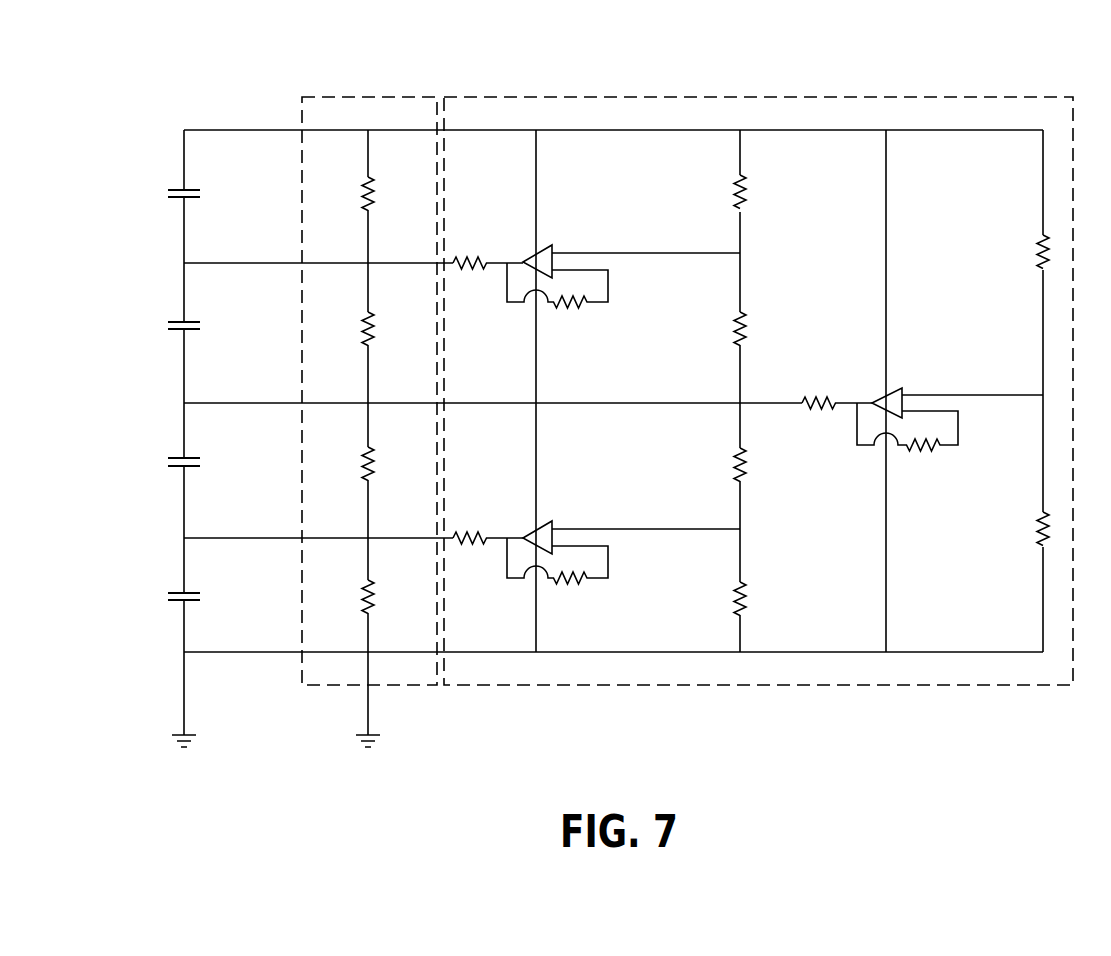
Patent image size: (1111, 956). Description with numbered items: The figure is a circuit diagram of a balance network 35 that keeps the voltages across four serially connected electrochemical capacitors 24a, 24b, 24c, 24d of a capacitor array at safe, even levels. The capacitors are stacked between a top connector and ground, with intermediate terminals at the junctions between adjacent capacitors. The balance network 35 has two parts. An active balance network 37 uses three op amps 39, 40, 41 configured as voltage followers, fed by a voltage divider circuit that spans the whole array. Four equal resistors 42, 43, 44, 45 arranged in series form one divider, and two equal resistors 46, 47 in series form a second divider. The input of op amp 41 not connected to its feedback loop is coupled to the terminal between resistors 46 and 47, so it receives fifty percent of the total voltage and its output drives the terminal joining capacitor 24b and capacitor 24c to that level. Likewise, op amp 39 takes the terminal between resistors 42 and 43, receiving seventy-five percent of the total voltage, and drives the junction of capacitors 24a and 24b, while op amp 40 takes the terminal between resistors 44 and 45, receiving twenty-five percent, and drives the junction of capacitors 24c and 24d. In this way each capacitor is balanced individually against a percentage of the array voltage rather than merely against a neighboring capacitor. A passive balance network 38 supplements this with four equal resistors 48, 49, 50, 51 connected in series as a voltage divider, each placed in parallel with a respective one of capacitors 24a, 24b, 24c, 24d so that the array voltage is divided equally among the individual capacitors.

The balance network 35 is at (1086, 38).
The capacitor 24a is at (168, 196).
The capacitor 24b is at (168, 328).
The capacitor 24c is at (168, 465).
The capacitor 24d is at (168, 600).
The active balance network 37 is at (800, 97).
The passive balance network 38 is at (335, 97).
The op amp 39 is at (542, 262).
The op amp 40 is at (542, 538).
The op amp 41 is at (887, 403).
The resistor 42 is at (745, 193).
The resistor 43 is at (745, 320).
The resistor 44 is at (745, 462).
The resistor 45 is at (745, 590).
The resistor 46 is at (1040, 258).
The resistor 47 is at (1040, 536).
The resistor 48 is at (372, 192).
The resistor 49 is at (372, 327).
The resistor 50 is at (372, 462).
The resistor 51 is at (372, 600).